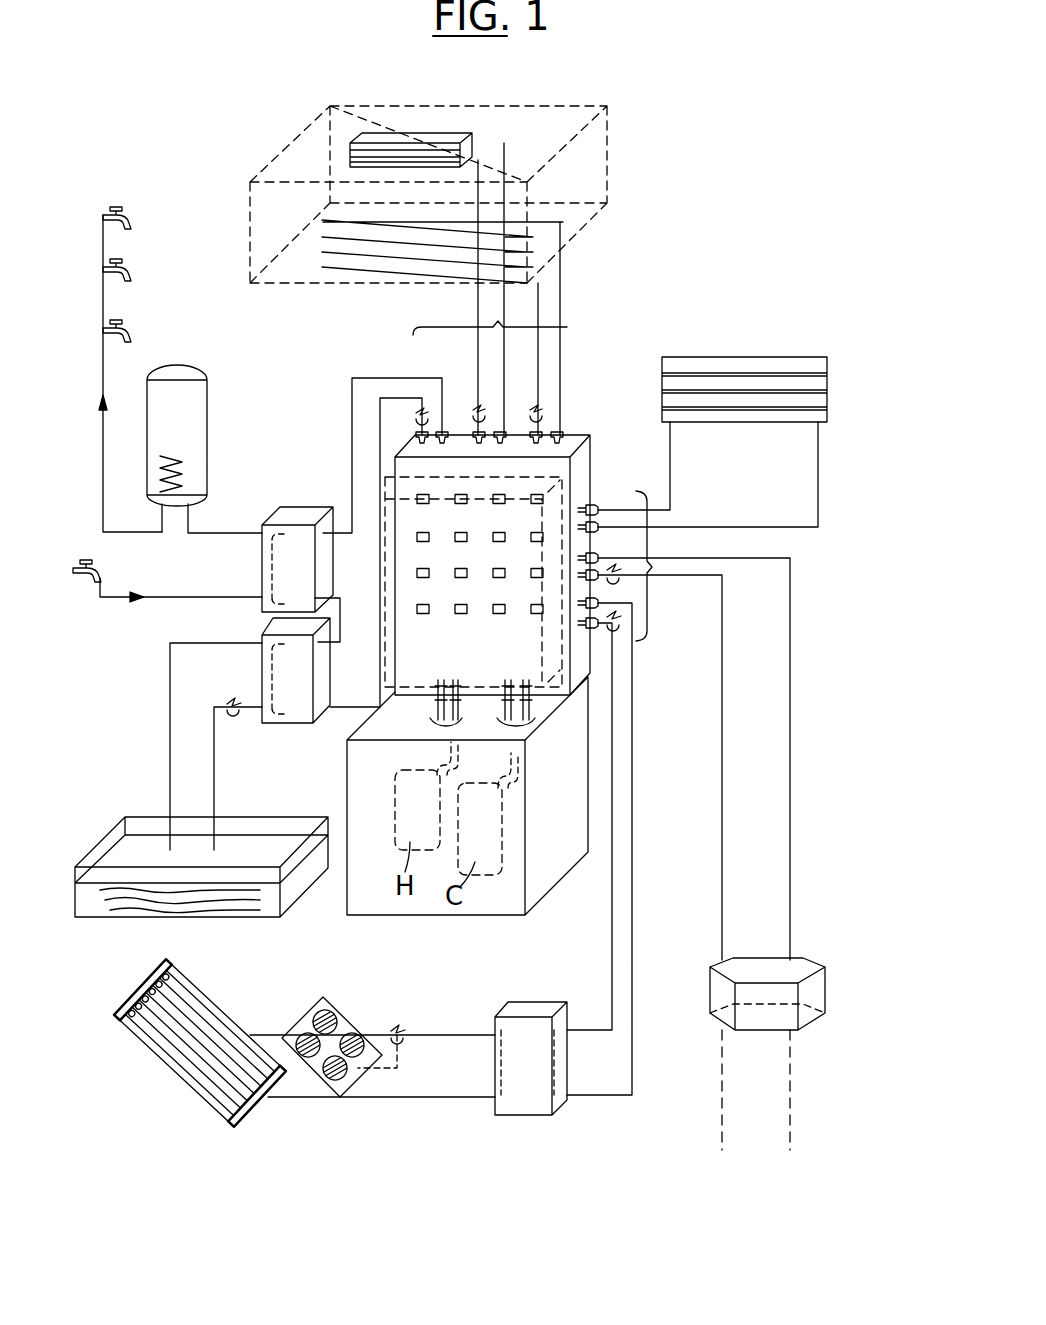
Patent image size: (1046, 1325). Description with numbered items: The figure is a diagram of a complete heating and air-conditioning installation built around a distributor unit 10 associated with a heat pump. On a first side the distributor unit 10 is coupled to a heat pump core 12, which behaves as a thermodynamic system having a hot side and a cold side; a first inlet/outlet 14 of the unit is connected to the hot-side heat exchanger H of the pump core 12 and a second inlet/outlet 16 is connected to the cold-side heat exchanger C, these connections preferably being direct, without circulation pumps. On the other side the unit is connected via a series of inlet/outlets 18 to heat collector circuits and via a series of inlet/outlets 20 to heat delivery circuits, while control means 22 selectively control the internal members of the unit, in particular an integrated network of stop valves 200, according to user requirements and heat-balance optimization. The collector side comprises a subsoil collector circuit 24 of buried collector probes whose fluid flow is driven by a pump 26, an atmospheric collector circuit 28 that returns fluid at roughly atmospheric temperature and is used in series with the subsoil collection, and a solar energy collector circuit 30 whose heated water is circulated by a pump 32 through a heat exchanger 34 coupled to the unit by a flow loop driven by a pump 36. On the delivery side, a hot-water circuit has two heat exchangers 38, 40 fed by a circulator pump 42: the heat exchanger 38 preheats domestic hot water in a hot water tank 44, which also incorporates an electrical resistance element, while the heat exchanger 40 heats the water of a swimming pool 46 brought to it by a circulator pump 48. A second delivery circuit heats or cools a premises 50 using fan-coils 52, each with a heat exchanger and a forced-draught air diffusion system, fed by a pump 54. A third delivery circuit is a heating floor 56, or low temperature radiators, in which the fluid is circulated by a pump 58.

The distributor unit 10 is at (580, 463).
The heat pump core 12 is at (470, 908).
The first inlet/outlet 14 is at (432, 796).
The second inlet/outlet 16 is at (493, 809).
The inlet/outlets 18 is at (664, 566).
The inlet/outlets 20 is at (490, 313).
The control means 22 is at (383, 478).
The subsoil collector circuit 24 is at (818, 928).
The pump 26 is at (629, 589).
The atmospheric collector circuit 28 is at (755, 367).
The solar energy collector circuit 30 is at (186, 1106).
The pump 32 is at (403, 1040).
The heat exchanger 34 is at (525, 1108).
The pump 36 is at (613, 630).
The heat exchanger 38 is at (296, 515).
The heat exchanger 40 is at (293, 715).
The circulator pump 42 is at (422, 413).
The hot water tank 44 is at (200, 415).
The swimming pool 46 is at (108, 850).
The circulator pump 48 is at (234, 720).
The premises 50 is at (607, 132).
The fan-coils 52 is at (415, 147).
The pump 54 is at (479, 412).
The heating floor 56 is at (343, 238).
The pump 58 is at (536, 412).
The stop valves 200 is at (460, 612).